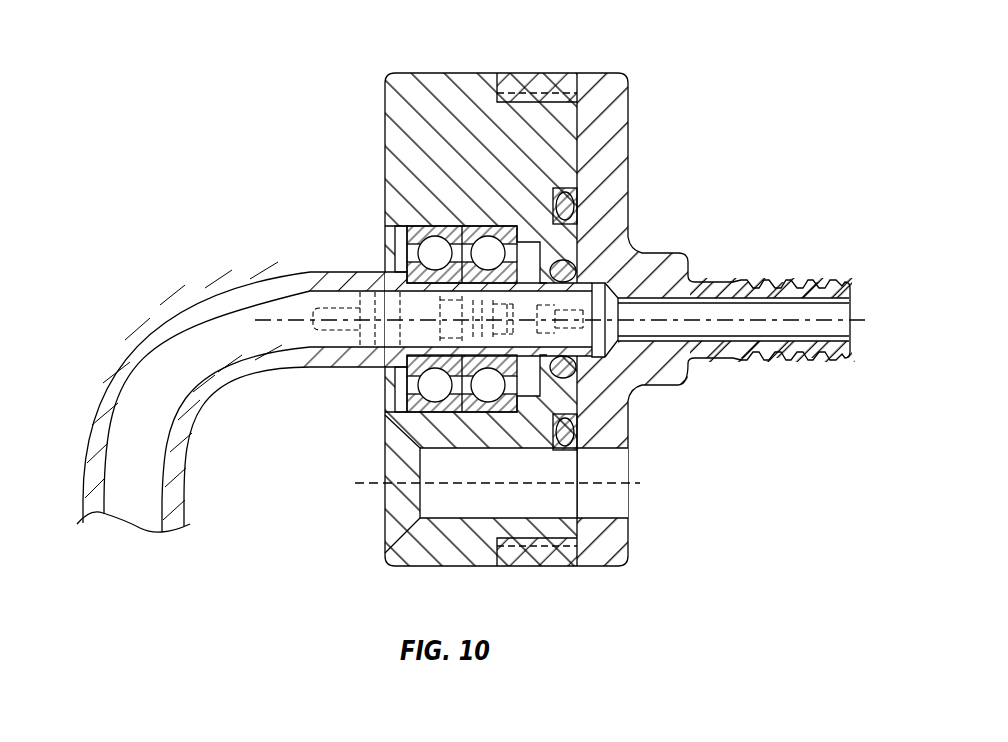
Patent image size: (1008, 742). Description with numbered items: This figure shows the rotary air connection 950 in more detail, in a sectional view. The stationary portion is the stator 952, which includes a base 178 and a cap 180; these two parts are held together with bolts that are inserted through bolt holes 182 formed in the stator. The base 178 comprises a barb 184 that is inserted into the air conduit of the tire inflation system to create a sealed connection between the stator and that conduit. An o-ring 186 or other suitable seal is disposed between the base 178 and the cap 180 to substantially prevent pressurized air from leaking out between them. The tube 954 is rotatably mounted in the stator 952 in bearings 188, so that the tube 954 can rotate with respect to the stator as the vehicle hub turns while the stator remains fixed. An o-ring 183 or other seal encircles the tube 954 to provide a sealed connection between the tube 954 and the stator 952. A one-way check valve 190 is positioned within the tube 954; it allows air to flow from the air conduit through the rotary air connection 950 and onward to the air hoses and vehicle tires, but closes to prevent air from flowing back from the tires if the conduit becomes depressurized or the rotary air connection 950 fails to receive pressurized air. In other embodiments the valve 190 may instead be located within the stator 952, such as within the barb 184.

The stator 952 is at (411, 60).
The cap 180 is at (393, 72).
The base 178 is at (610, 73).
The rotary air connection 950 is at (676, 62).
The o-ring 186 is at (568, 203).
The o-ring 183 is at (562, 272).
The bearings 188 is at (422, 255).
The one-way check valve 190 is at (330, 308).
The tube 954 is at (118, 388).
The barb 184 is at (778, 358).
The bolt holes 182 is at (557, 518).